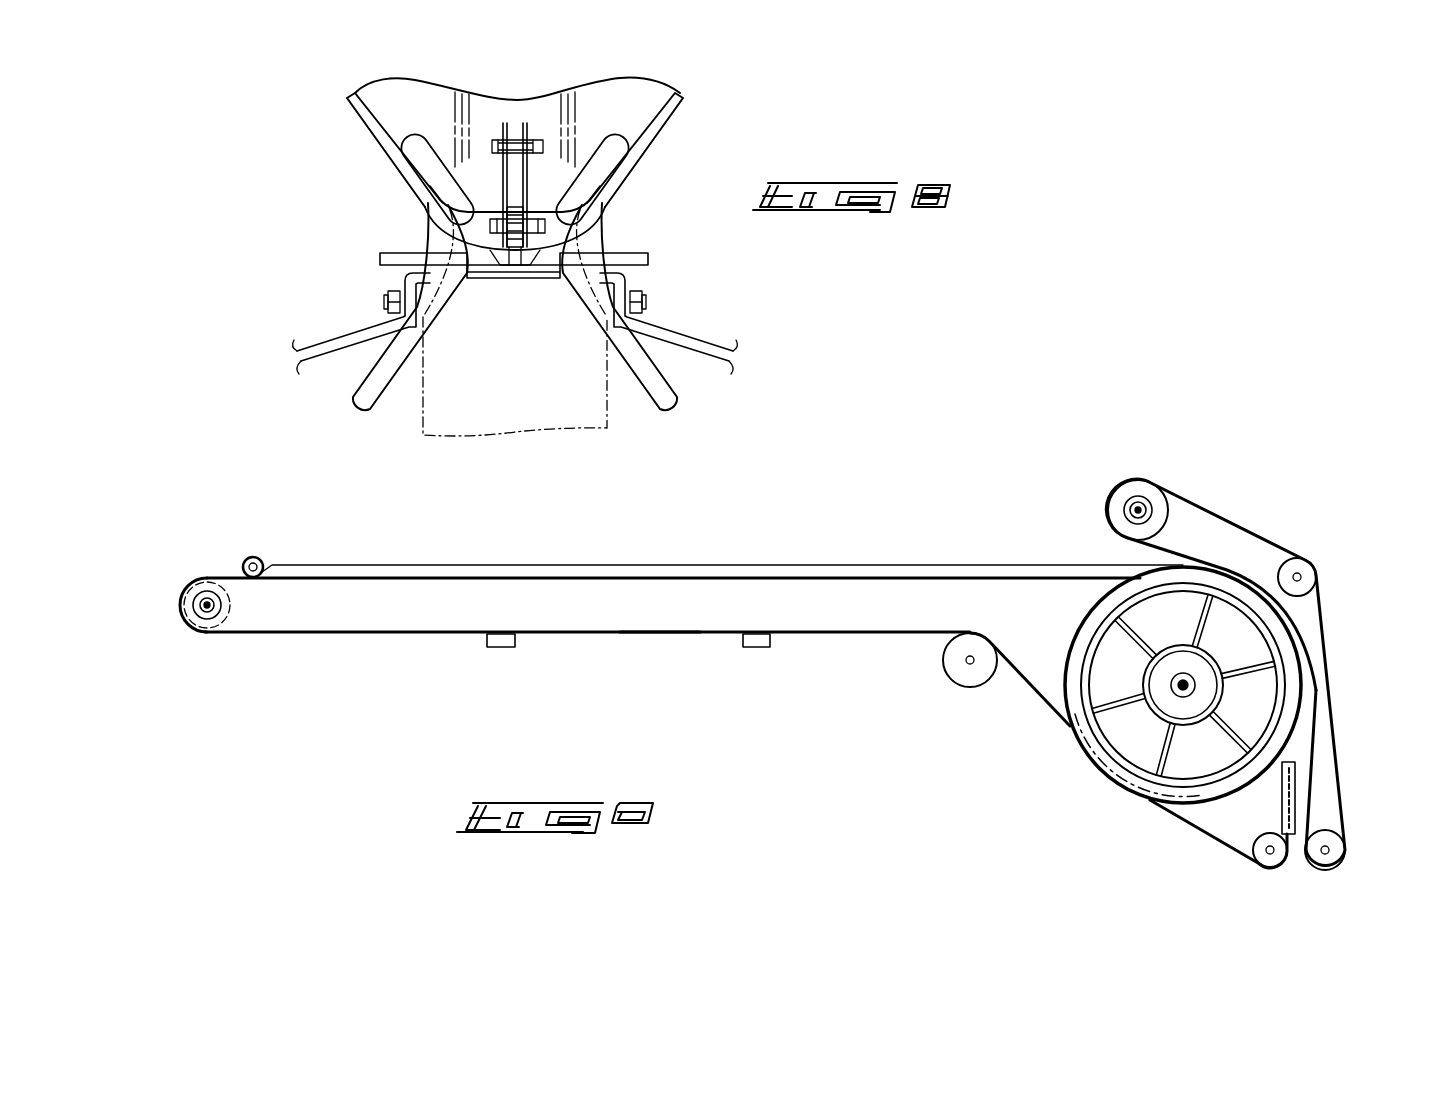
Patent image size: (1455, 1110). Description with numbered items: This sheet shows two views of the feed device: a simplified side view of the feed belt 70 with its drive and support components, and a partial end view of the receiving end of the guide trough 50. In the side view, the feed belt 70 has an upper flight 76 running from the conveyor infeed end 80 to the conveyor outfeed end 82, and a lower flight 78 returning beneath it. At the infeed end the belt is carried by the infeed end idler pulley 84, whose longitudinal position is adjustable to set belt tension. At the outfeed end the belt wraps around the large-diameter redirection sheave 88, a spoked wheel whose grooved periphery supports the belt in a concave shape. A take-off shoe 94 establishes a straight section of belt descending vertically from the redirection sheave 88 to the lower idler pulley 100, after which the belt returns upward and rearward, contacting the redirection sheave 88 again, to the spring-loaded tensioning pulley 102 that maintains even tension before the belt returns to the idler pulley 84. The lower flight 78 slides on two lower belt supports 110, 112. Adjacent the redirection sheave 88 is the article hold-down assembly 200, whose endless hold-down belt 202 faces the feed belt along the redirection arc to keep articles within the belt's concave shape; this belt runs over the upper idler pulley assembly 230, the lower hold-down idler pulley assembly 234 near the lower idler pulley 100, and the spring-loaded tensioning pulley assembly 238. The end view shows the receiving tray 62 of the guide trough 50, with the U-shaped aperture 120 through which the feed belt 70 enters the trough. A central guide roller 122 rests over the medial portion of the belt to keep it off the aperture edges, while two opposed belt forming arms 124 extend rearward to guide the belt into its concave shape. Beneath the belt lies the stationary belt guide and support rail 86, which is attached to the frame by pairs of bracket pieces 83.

In FIG. 8, the guide trough 50 is at (348, 121).
In FIG. 8, the receiving tray 62 is at (647, 92).
In FIG. 8, the feed belt 70 is at (513, 425).
In FIG. 6, the feed belt 70 is at (280, 640).
In FIG. 6, the upper flight 76 is at (432, 572).
In FIG. 6, the lower flight 78 is at (648, 636).
In FIG. 6, the conveyor infeed end 80 is at (190, 553).
In FIG. 6, the conveyor outfeed end 82 is at (1075, 548).
In FIG. 8, the bracket pieces 83 is at (325, 347).
In FIG. 6, the infeed end idler pulley 84 is at (215, 633).
In FIG. 8, the belt guide and support rail 86 is at (480, 272).
In FIG. 6, the redirection sheave 88 is at (1097, 621).
In FIG. 6, the take-off shoe 94 is at (1283, 792).
In FIG. 6, the lower idler pulley 100 is at (1253, 860).
In FIG. 6, the tensioning pulley 102 is at (964, 683).
In FIG. 6, the lower belt support 110 is at (757, 650).
In FIG. 6, the lower belt support 112 is at (493, 650).
In FIG. 8, the U-shaped aperture 120 is at (418, 150).
In FIG. 8, the central guide roller 122 is at (515, 268).
In FIG. 6, the central guide roller 122 is at (257, 557).
In FIG. 8, the belt forming arms 124 is at (372, 403).
In FIG. 6, the article hold-down assembly 200 is at (1297, 535).
In FIG. 6, the hold-down belt 202 is at (1343, 820).
In FIG. 6, the upper idler pulley assembly 230 is at (1128, 488).
In FIG. 6, the lower hold-down idler pulley assembly 234 is at (1345, 865).
In FIG. 6, the tensioning pulley assembly 238 is at (1315, 590).